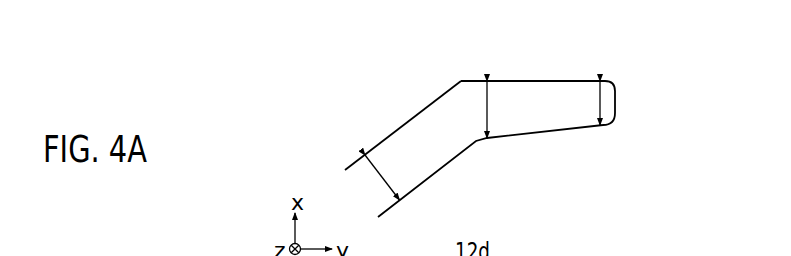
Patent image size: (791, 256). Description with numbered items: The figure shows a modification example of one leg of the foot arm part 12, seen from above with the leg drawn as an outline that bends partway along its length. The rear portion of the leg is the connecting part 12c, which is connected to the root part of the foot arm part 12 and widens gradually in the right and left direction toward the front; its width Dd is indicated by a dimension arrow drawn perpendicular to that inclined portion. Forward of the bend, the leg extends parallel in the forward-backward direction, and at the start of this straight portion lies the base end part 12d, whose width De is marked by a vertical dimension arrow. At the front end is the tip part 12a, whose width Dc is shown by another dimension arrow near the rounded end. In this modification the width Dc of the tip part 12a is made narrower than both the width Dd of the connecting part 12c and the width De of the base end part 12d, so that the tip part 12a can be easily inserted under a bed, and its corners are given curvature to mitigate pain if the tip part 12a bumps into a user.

The foot arm part 12 is at (634, 251).
The tip part 12a is at (596, 80).
The connecting part 12c is at (375, 177).
The base end part 12d is at (487, 103).
The width of the connecting parts Dd is at (378, 175).
The width of the base end parts De is at (490, 103).
The width of the tip parts Dc is at (597, 105).